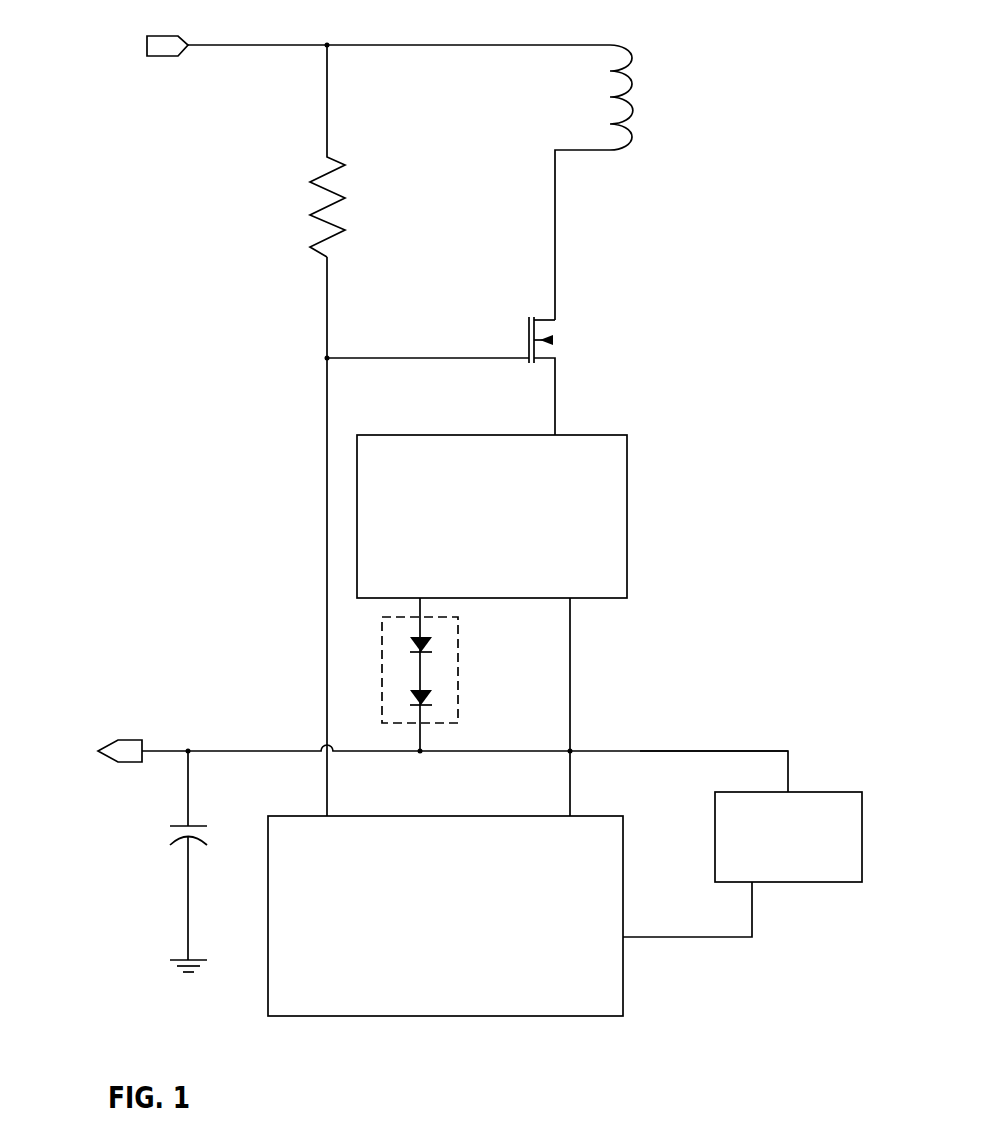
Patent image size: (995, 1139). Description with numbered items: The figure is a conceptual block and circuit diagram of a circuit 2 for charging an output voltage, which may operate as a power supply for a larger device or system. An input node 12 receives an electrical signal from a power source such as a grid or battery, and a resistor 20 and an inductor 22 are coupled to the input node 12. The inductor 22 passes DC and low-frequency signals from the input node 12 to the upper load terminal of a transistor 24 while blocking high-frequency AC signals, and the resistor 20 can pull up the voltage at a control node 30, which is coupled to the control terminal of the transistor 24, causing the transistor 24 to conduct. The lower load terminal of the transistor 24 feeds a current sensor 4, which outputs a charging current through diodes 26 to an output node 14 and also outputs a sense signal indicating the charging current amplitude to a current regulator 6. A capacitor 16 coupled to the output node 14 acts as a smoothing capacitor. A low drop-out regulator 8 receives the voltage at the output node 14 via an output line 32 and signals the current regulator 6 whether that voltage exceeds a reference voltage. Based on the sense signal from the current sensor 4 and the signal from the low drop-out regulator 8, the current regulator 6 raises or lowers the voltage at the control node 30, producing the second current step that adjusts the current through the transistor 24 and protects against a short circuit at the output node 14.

The circuit 2 is at (769, 68).
The current sensor 4 is at (585, 435).
The current regulator 6 is at (580, 1016).
The low drop-out regulator 8 is at (788, 883).
The input node 12 is at (168, 58).
The output node 14 is at (135, 740).
The capacitor 16 is at (183, 838).
The resistor 20 is at (317, 177).
The inductor 22 is at (610, 42).
The transistor 24 is at (540, 317).
The diodes 26 is at (458, 660).
The control node 30 is at (326, 358).
The output line 32 is at (698, 745).